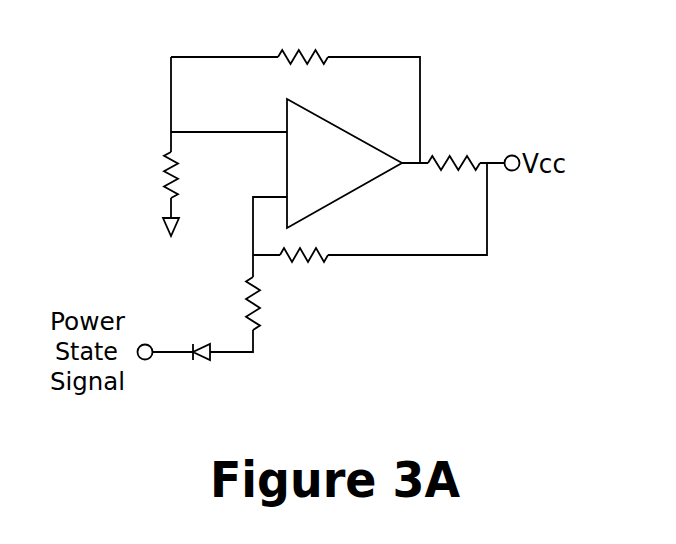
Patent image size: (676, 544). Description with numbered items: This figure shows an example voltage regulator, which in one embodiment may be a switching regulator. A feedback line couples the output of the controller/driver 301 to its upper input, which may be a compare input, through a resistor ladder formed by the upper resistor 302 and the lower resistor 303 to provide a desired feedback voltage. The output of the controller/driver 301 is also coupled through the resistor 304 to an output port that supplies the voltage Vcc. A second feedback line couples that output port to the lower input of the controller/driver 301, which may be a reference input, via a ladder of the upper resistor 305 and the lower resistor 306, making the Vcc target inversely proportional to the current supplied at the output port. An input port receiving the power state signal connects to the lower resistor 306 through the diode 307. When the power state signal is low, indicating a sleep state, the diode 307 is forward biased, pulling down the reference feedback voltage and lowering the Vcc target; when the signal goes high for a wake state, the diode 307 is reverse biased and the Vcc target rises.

The controller/driver 301 is at (352, 177).
The upper resistor 302 is at (303, 41).
The lower resistor 303 is at (146, 175).
The resistor 304 is at (454, 147).
The upper resistor 305 is at (304, 272).
The lower resistor 306 is at (229, 303).
The diode 307 is at (201, 368).